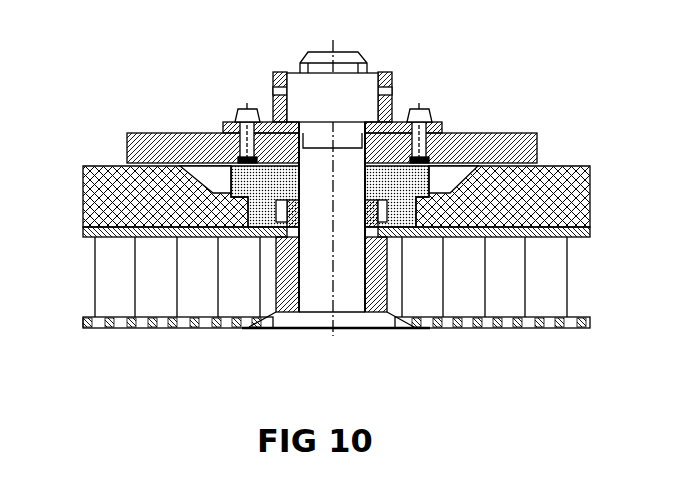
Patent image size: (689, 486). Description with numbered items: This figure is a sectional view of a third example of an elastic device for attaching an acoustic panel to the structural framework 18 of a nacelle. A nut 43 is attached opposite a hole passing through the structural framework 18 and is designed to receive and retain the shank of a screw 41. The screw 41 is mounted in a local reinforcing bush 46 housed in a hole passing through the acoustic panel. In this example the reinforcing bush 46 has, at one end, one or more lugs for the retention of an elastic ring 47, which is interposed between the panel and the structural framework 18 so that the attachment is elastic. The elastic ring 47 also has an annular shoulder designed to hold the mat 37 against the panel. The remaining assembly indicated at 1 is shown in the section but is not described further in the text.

The heat exchanger / finned base 1 is at (126, 286).
The structural framework 18 is at (292, 172).
The mat 37 is at (571, 165).
The screw 41 is at (361, 334).
The nut 43 is at (393, 69).
The reinforcing bush 46 is at (275, 270).
The elastic ring 47 is at (197, 133).